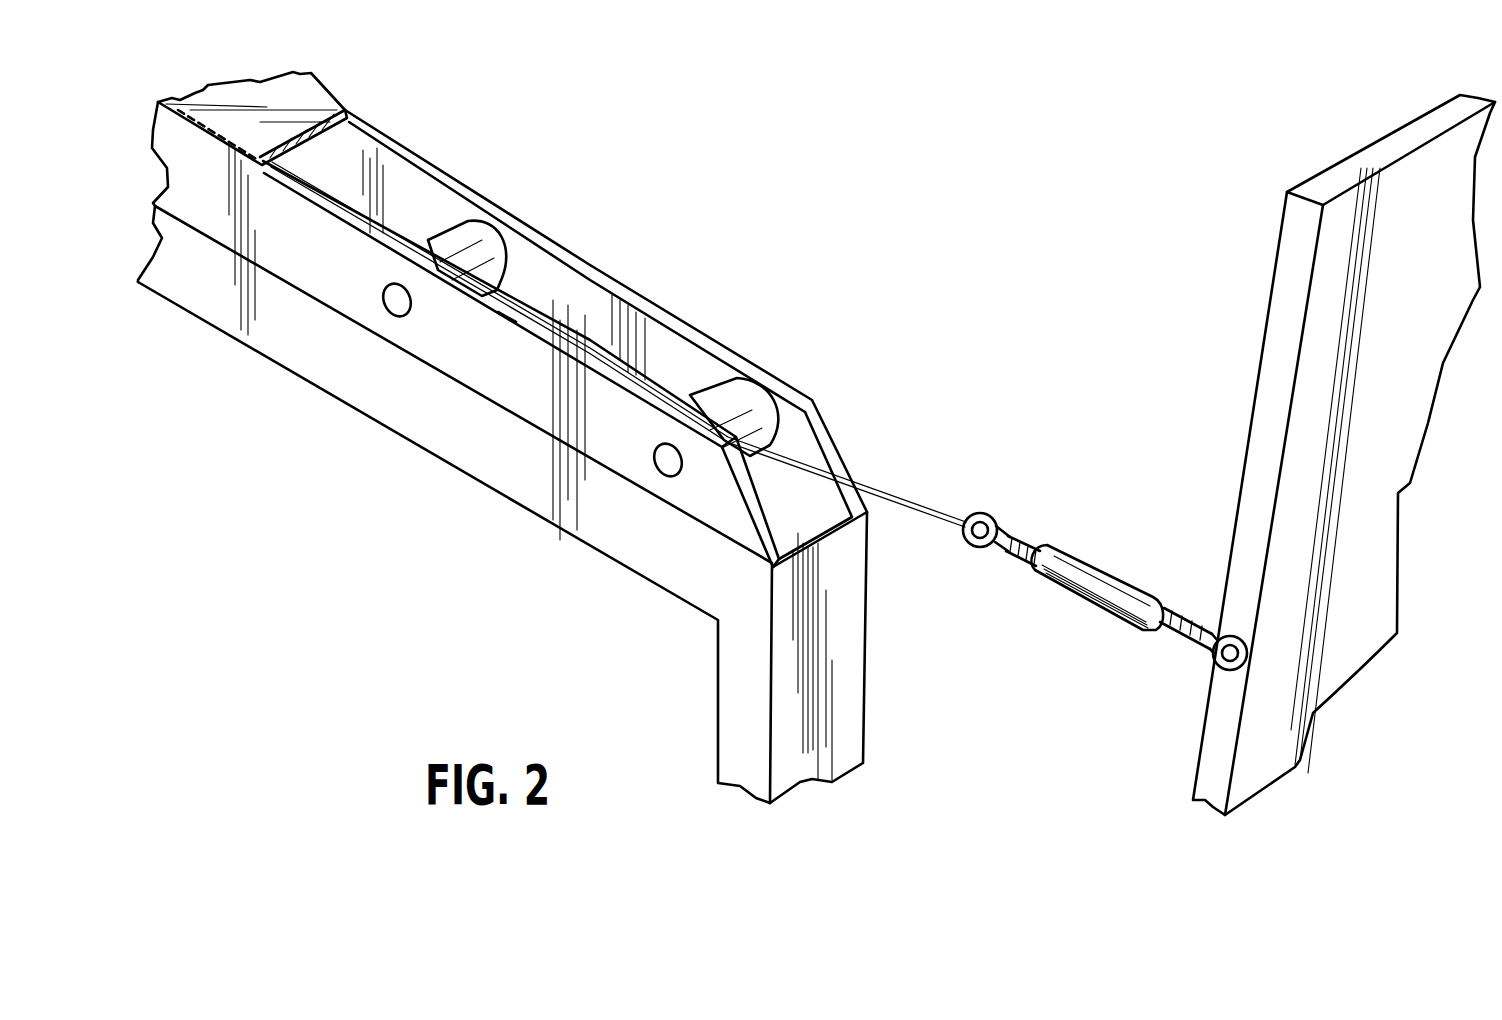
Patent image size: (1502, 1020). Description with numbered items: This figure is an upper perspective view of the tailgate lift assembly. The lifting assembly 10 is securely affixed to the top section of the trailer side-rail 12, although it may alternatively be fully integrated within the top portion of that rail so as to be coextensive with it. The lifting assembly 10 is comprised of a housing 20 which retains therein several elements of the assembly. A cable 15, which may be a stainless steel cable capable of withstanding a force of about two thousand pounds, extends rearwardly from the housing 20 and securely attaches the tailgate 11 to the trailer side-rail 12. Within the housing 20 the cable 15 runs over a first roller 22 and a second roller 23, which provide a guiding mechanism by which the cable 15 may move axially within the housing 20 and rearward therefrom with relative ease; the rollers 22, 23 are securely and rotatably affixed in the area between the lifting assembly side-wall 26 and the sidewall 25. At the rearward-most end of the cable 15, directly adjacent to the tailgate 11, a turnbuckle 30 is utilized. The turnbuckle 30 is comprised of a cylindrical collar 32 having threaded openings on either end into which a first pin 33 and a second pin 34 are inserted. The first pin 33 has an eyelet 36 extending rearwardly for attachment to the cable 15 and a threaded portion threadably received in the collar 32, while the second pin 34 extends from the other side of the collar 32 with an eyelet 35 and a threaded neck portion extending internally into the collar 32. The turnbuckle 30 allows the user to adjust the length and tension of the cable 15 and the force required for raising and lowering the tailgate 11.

The lifting assembly 10 is at (751, 172).
The tailgate 11 is at (1355, 163).
The trailer side-rail 12 is at (213, 307).
The cable 15 is at (357, 210).
The housing 20 is at (320, 97).
The first roller 22 is at (480, 240).
The second roller 23 is at (752, 393).
The sidewall 25 is at (560, 252).
The lifting assembly side-wall 26 is at (507, 320).
The turnbuckle 30 is at (1102, 503).
The cylindrical collar 32 is at (1118, 578).
The first pin 33 is at (1022, 540).
The second pin 34 is at (1182, 620).
The eyelet 35 is at (1250, 642).
The eyelet 36 is at (980, 510).